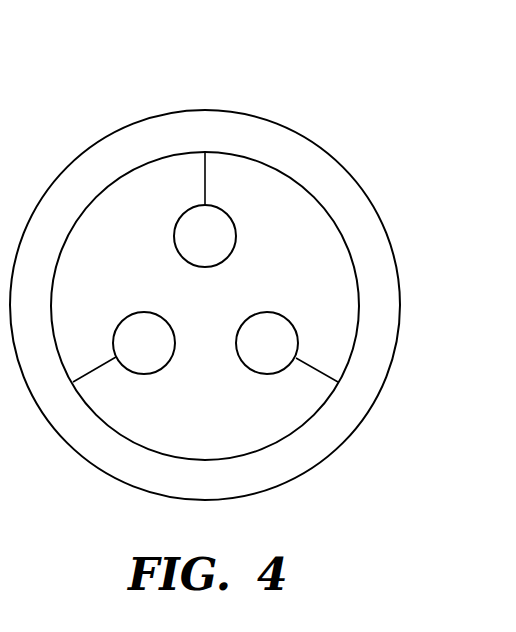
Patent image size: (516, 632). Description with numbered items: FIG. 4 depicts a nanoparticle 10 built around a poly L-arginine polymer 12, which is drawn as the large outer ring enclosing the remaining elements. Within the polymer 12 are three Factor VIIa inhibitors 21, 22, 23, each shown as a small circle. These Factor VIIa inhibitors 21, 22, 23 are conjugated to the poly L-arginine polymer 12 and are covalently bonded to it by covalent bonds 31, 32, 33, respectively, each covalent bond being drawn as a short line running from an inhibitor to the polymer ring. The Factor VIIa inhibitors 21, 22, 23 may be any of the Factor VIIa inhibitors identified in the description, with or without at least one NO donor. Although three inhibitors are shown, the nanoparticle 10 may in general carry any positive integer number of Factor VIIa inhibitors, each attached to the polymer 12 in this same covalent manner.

The nanoparticle 10 is at (205, 80).
The poly L-arginine polymer 12 is at (390, 302).
The Factor VIIa inhibitor 21 is at (205, 236).
The Factor VIIa inhibitor 22 is at (267, 343).
The Factor VIIa inhibitor 23 is at (144, 343).
The covalent bond 31 is at (207, 183).
The covalent bond 32 is at (315, 370).
The covalent bond 33 is at (92, 375).